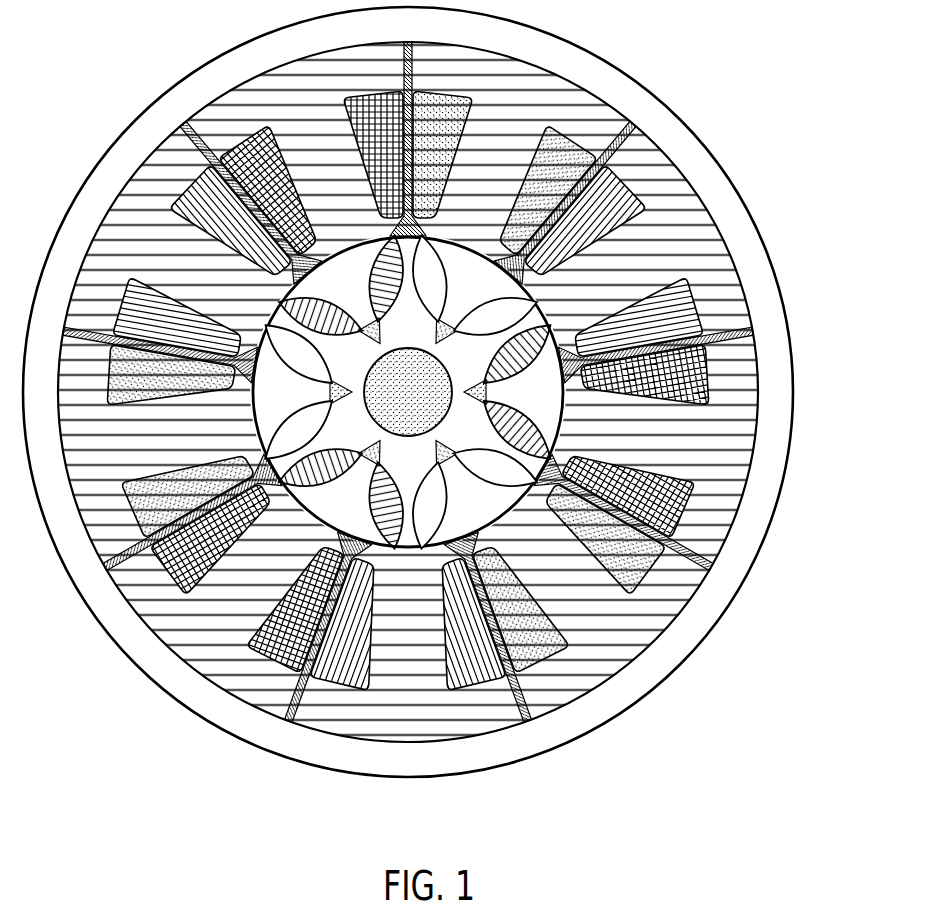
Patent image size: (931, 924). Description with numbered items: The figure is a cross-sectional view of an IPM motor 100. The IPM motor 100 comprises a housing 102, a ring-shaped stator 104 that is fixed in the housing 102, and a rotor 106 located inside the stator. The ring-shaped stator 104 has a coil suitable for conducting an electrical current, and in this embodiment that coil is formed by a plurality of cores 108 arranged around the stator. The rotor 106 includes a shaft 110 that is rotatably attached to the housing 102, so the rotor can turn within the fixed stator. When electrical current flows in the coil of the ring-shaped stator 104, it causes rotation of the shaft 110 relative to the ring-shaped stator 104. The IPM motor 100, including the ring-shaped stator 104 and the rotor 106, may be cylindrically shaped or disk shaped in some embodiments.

The IPM motor 100 is at (697, 79).
The housing 102 is at (736, 183).
The ring-shaped stator 104 is at (772, 408).
The rotor 106 is at (580, 395).
The cores 108 is at (705, 521).
The shaft 110 is at (395, 401).